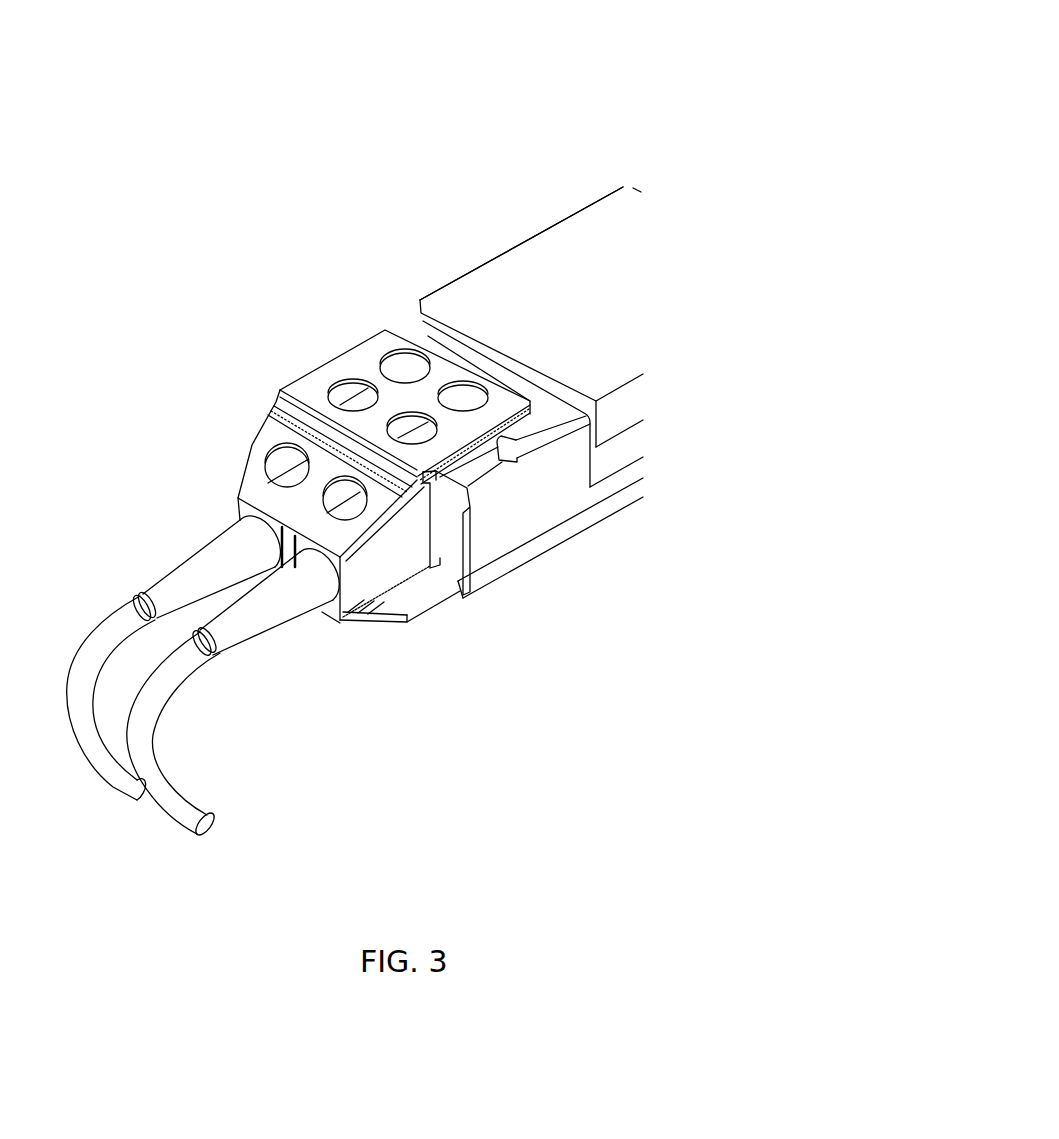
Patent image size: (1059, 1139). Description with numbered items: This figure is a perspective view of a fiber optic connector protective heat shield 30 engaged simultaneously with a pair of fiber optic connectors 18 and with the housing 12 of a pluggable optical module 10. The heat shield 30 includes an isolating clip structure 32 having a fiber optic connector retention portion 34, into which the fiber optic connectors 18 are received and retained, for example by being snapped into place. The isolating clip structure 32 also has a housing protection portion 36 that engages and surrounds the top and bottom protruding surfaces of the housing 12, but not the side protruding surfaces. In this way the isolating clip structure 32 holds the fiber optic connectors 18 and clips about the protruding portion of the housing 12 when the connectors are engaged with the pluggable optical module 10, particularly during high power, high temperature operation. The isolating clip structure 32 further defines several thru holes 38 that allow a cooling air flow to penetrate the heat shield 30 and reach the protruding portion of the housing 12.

The pluggable optical module 10 is at (536, 139).
The housing 12 is at (641, 192).
The fiber optic connectors 18 is at (383, 575).
The heat shield 30 is at (325, 337).
The isolating clip structure 32 is at (325, 337).
The fiber optic connector retention portion 34 is at (230, 436).
The housing protection portion 36 is at (276, 352).
The thru holes 38 is at (410, 356).